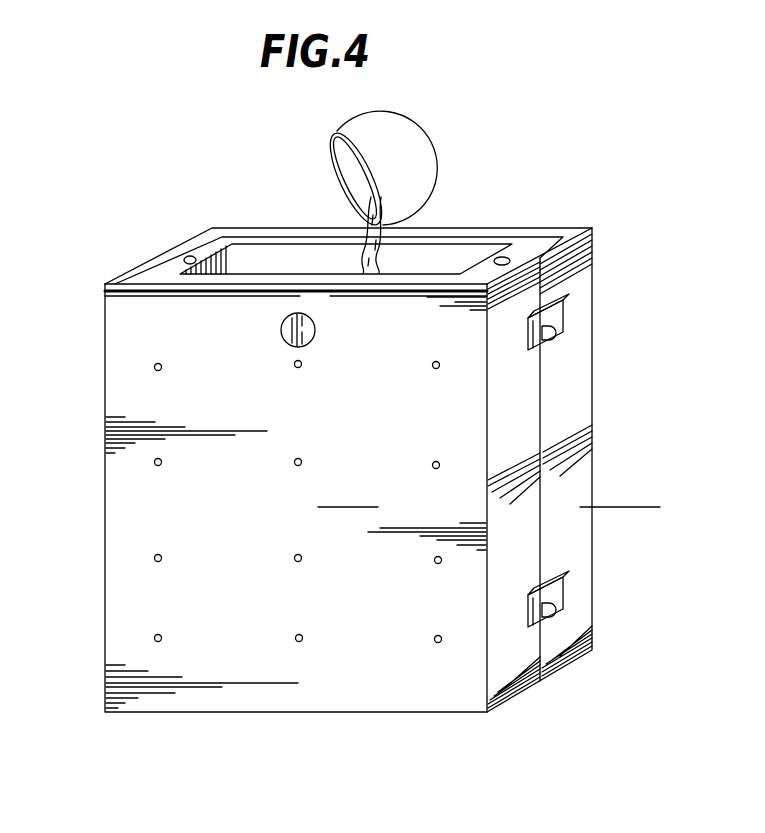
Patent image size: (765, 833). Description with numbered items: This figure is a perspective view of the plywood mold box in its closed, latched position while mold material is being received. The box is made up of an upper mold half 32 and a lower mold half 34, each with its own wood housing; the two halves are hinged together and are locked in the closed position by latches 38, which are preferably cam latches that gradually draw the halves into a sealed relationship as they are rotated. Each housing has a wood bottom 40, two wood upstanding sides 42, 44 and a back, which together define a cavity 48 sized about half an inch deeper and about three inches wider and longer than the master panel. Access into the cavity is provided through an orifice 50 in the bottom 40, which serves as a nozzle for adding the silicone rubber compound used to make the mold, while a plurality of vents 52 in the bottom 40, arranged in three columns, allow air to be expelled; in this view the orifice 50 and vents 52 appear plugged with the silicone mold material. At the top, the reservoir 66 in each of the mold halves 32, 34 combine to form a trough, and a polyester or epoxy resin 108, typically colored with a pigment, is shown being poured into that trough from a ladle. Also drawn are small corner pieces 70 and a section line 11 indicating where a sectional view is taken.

The upper mold half 32 is at (604, 262).
The lower mold half 34 is at (538, 409).
The latches 38 is at (565, 313).
The wood bottom 40 is at (594, 537).
The upstanding side 42 is at (578, 662).
The upstanding side 44 is at (177, 245).
The cavity 48 is at (282, 255).
The orifice 50 is at (318, 324).
The vents 52 is at (155, 637).
The reservoir 66 is at (330, 273).
The corner clip 70 is at (193, 257).
The resin 108 is at (383, 228).
The section line indicator 11 is at (342, 495).